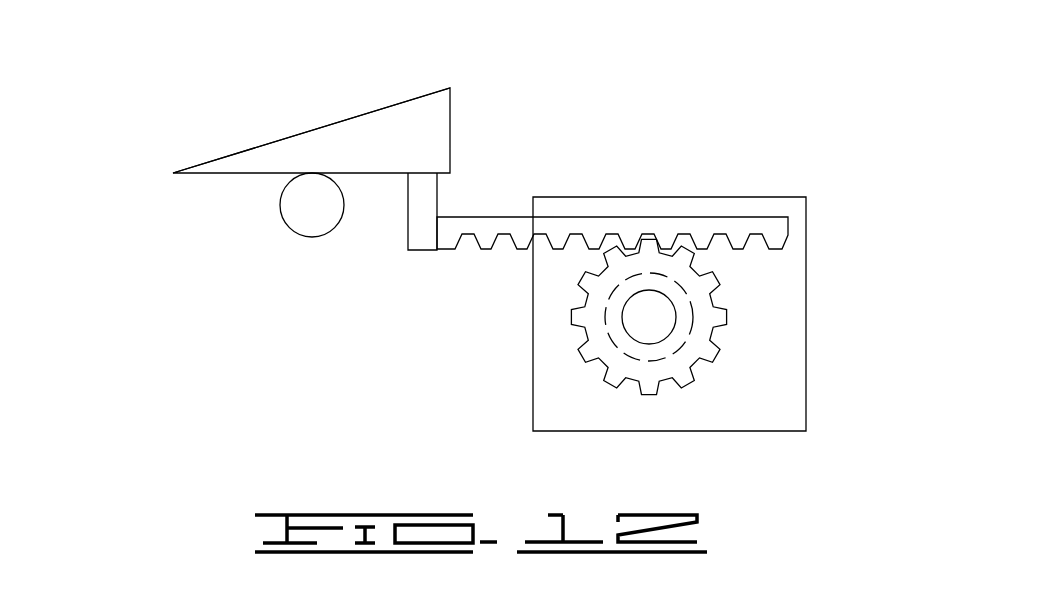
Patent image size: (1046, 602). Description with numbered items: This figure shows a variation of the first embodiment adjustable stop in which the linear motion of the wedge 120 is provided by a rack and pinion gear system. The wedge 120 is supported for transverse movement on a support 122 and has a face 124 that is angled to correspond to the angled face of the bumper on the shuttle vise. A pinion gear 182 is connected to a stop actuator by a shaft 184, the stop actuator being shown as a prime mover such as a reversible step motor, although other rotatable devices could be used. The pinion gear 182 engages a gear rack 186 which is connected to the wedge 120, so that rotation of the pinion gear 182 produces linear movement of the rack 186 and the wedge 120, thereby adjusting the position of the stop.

The wedge 120 is at (380, 125).
The face 124 is at (277, 143).
The support 122 is at (298, 212).
The gear rack 186 is at (478, 250).
The pinion gear 182 is at (667, 372).
The shaft 184 is at (662, 312).